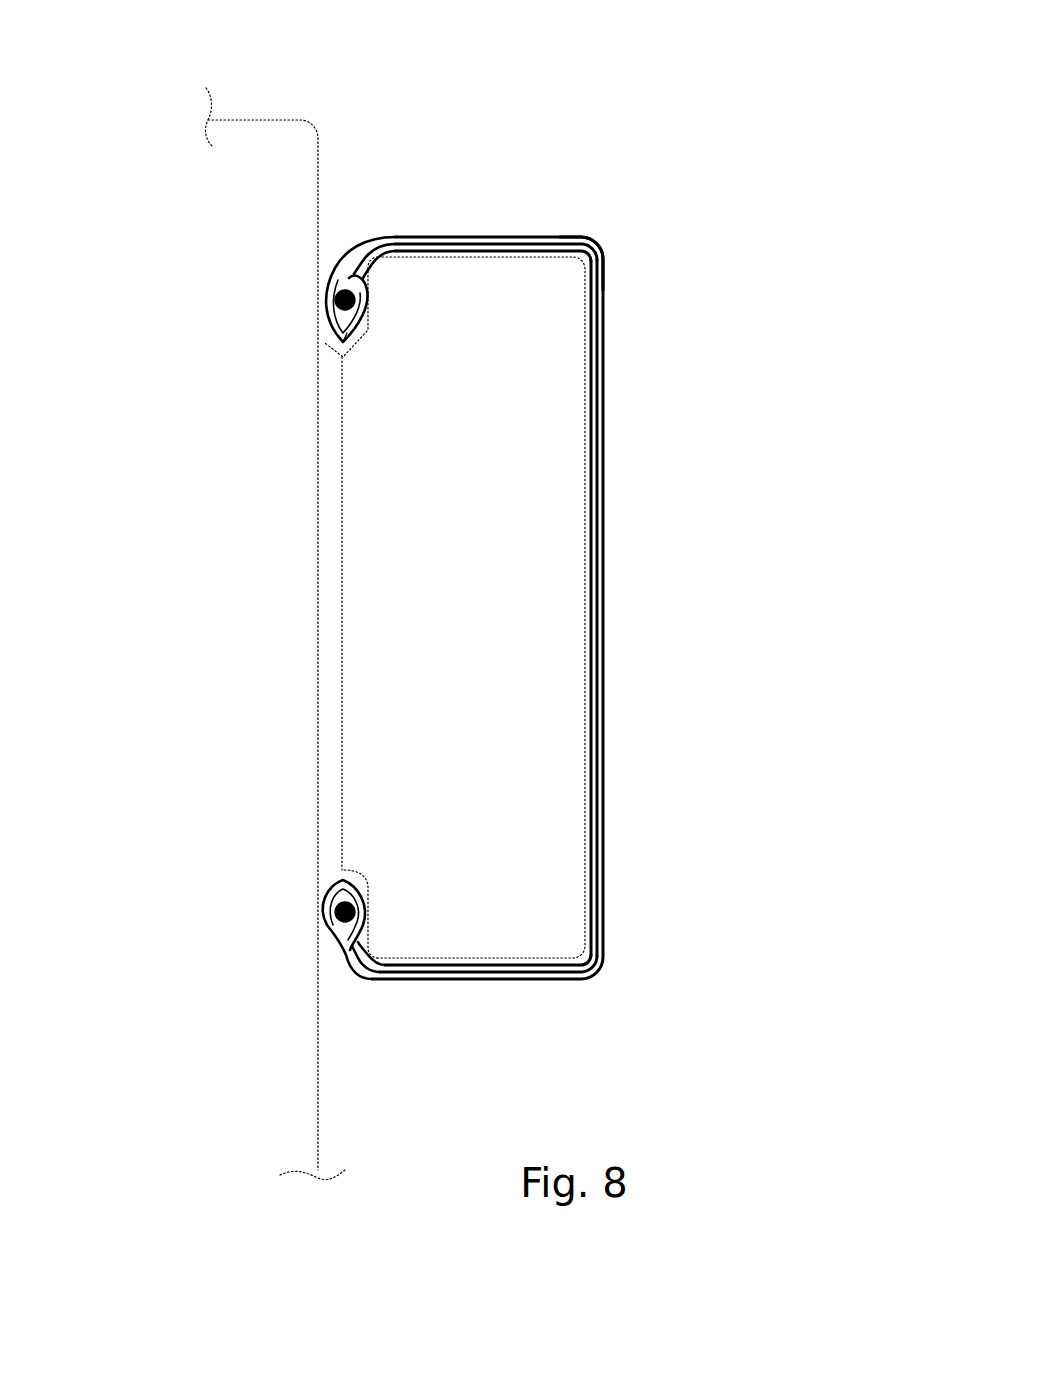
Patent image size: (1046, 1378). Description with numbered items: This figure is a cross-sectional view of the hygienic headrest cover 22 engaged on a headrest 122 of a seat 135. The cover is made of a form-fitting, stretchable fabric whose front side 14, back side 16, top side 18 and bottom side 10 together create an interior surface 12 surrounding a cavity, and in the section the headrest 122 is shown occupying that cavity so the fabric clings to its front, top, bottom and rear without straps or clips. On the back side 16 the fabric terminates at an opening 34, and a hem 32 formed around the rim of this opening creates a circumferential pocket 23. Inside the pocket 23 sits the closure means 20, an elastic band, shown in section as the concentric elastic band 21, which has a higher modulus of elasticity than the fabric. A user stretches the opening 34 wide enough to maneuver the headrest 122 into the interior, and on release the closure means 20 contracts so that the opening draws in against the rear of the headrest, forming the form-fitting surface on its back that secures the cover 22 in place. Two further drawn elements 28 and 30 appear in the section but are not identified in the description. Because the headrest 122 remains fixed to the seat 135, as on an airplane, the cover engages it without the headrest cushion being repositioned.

The bottom side 10 is at (482, 980).
The interior surface 12 is at (548, 966).
The front side 14 is at (607, 368).
The back side 16 is at (340, 946).
The top side 18 is at (448, 237).
The closure means 20 is at (332, 266).
The concentric elastic band 21 is at (323, 303).
The headrest cover 22 is at (605, 282).
The circumferential pocket 23 is at (347, 333).
The intermediate wall 28 is at (503, 255).
The inner lining 30 is at (593, 403).
The hem 32 is at (345, 237).
The opening 34 is at (343, 873).
The headrest 122 is at (467, 522).
The seat 135 is at (253, 657).